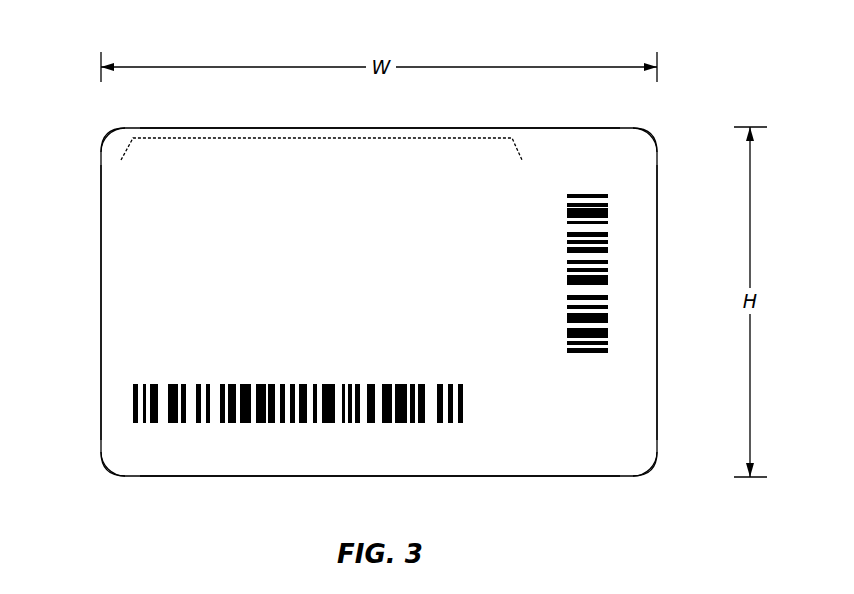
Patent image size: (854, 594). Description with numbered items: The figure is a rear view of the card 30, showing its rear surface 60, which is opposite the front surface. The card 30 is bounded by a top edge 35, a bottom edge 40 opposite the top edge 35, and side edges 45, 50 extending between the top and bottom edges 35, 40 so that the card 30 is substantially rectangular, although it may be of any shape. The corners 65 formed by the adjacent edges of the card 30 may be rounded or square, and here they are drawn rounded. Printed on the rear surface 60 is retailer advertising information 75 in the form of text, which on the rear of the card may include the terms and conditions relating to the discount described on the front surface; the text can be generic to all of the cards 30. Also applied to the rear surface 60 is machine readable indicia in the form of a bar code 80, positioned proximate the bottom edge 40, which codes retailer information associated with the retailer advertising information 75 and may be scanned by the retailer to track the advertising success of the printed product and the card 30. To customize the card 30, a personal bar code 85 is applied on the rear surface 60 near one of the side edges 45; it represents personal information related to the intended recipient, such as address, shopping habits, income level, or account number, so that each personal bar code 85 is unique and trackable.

The card 30 is at (700, 118).
The top edge 35 is at (402, 128).
The bottom edge 40 is at (225, 478).
The side edge 45 is at (657, 233).
The side edge 50 is at (100, 239).
The rear surface 60 is at (502, 452).
The corners 65 is at (103, 137).
The retailer advertising information 75 is at (308, 138).
The bar code 80 is at (170, 383).
The personal bar code 85 is at (593, 297).